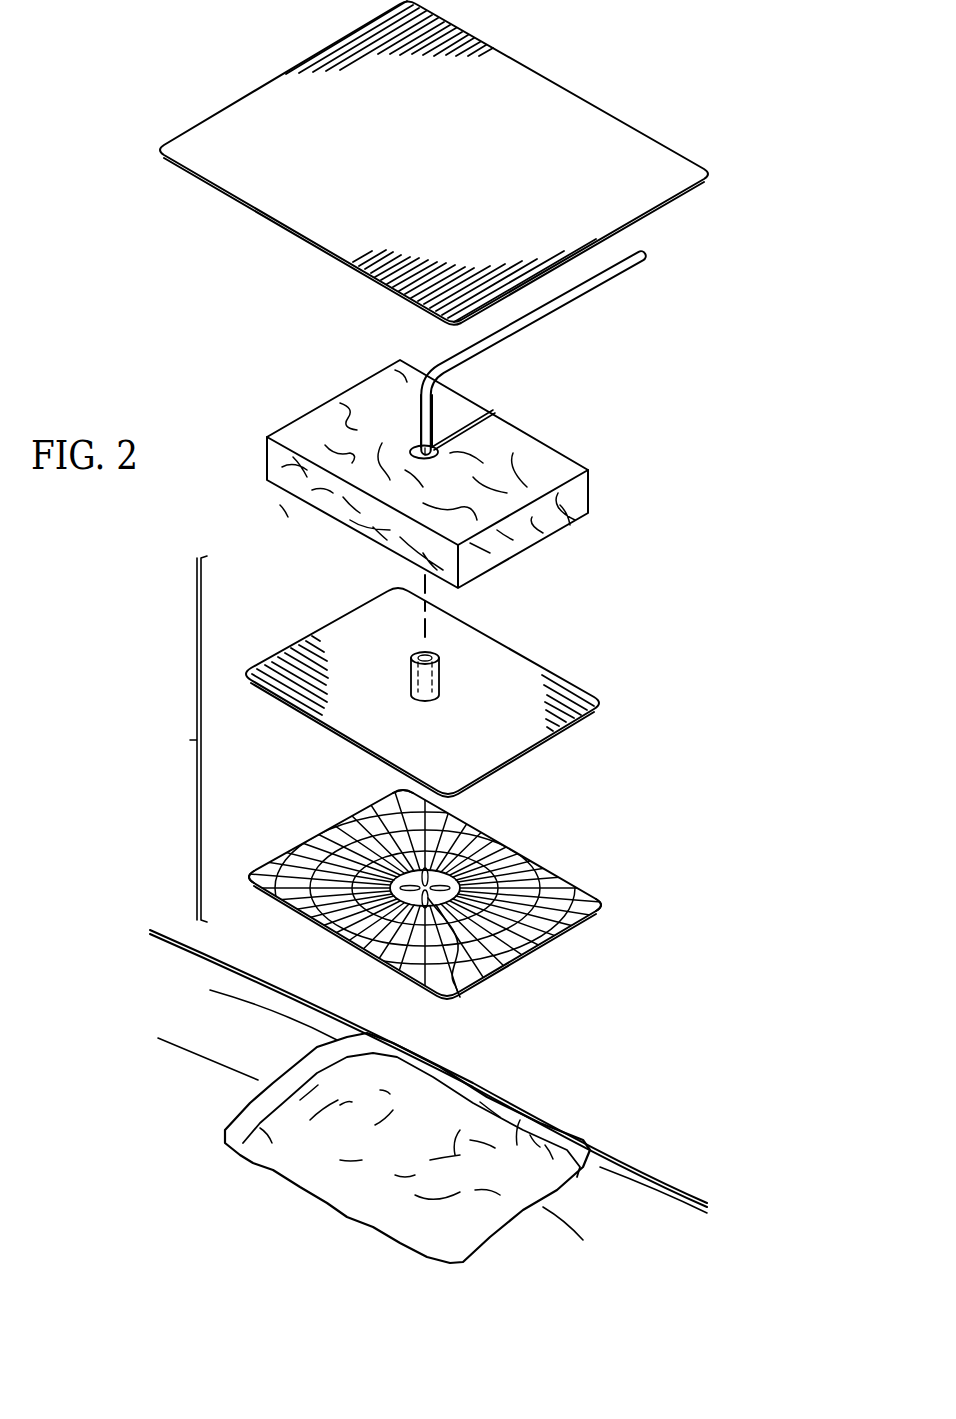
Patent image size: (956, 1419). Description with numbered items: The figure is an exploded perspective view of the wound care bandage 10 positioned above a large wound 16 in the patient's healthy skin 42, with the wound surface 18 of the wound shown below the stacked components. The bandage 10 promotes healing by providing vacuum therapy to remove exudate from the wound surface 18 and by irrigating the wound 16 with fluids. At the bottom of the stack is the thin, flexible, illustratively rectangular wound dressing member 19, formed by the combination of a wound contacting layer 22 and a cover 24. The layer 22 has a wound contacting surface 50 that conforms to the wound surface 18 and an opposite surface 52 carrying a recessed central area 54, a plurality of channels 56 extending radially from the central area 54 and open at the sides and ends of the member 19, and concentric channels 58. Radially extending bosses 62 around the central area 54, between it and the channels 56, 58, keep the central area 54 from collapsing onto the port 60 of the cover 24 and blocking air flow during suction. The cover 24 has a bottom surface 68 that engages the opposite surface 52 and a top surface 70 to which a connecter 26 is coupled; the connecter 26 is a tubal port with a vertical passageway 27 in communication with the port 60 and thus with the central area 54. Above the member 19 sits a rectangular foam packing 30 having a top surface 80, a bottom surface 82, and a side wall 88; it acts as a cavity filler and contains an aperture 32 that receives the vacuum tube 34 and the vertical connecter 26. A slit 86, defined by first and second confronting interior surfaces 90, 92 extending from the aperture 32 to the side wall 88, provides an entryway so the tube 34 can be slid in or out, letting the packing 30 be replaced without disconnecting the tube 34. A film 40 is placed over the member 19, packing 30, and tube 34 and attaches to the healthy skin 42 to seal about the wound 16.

The wound care bandage 10 is at (606, 77).
The wound 16 is at (386, 1141).
The wound surface 18 is at (258, 1163).
The wound dressing member 19 is at (182, 739).
The wound contacting layer 22 is at (425, 888).
The cover 24 is at (454, 684).
The connecter 26 is at (456, 666).
The vertical passageway 27 is at (418, 655).
The foam packing 30 is at (447, 461).
The aperture 32 is at (413, 446).
The vacuum tube 34 is at (600, 288).
The film 40 is at (632, 146).
The healthy skin 42 is at (641, 1158).
The wound contacting surface 50 is at (528, 958).
The opposite surface 52 is at (588, 890).
The central area 54 is at (461, 997).
The channels 56 is at (385, 797).
The concentric channels 58 is at (330, 833).
The port 60 is at (407, 673).
The bosses 62 is at (460, 870).
The bottom surface 68 is at (527, 755).
The top surface 70 is at (525, 668).
The top surface 80 is at (310, 411).
The bottom surface 82 is at (483, 580).
The slit 86 is at (531, 353).
The side wall 88 is at (357, 383).
The first interior surface 90 is at (472, 443).
The second interior surface 92 is at (468, 425).